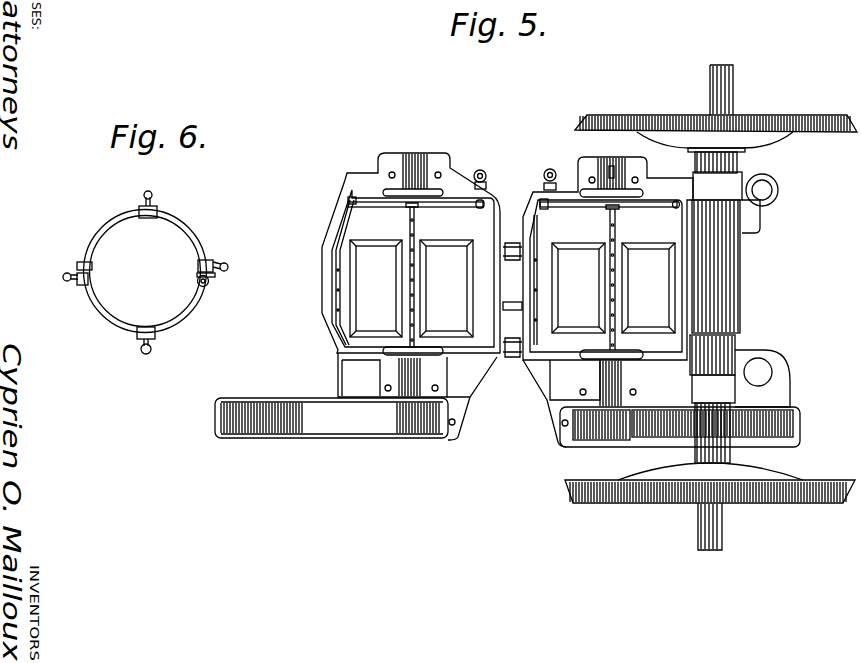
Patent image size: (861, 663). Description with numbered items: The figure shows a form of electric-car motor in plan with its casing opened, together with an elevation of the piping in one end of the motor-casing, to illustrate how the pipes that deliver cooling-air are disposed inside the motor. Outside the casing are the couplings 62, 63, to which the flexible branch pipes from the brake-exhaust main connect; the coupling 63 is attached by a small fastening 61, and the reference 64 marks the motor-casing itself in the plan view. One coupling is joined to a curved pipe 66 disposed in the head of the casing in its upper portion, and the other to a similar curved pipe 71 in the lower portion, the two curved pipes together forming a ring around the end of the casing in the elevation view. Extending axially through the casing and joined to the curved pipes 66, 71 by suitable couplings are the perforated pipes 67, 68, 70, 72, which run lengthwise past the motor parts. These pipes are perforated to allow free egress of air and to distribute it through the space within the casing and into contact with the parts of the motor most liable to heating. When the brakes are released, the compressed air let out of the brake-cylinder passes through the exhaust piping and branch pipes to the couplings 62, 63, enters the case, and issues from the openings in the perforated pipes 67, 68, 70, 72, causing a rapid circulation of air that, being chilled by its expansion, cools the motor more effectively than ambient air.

In FIG. 5, the screw 61 is at (543, 185).
In FIG. 5, the coupling 62 is at (483, 175).
In FIG. 6, the coupling 62 is at (208, 285).
In FIG. 5, the coupling 63 is at (551, 170).
In FIG. 6, the coupling 63 is at (215, 275).
In FIG. 5, the casing 64 is at (322, 303).
In FIG. 5, the curved pipe 66 is at (458, 202).
In FIG. 6, the curved pipe 66 is at (188, 322).
In FIG. 5, the perforated pipe 67 is at (414, 273).
In FIG. 6, the perforated pipe 67 is at (143, 355).
In FIG. 5, the perforated pipe 68 is at (350, 222).
In FIG. 6, the perforated pipe 68 is at (68, 283).
In FIG. 5, the perforated pipe 70 is at (537, 283).
In FIG. 6, the perforated pipe 70 is at (232, 263).
In FIG. 5, the curved pipe 71 is at (653, 208).
In FIG. 6, the curved pipe 71 is at (188, 222).
In FIG. 5, the perforated pipe 72 is at (615, 283).
In FIG. 6, the perforated pipe 72 is at (150, 202).